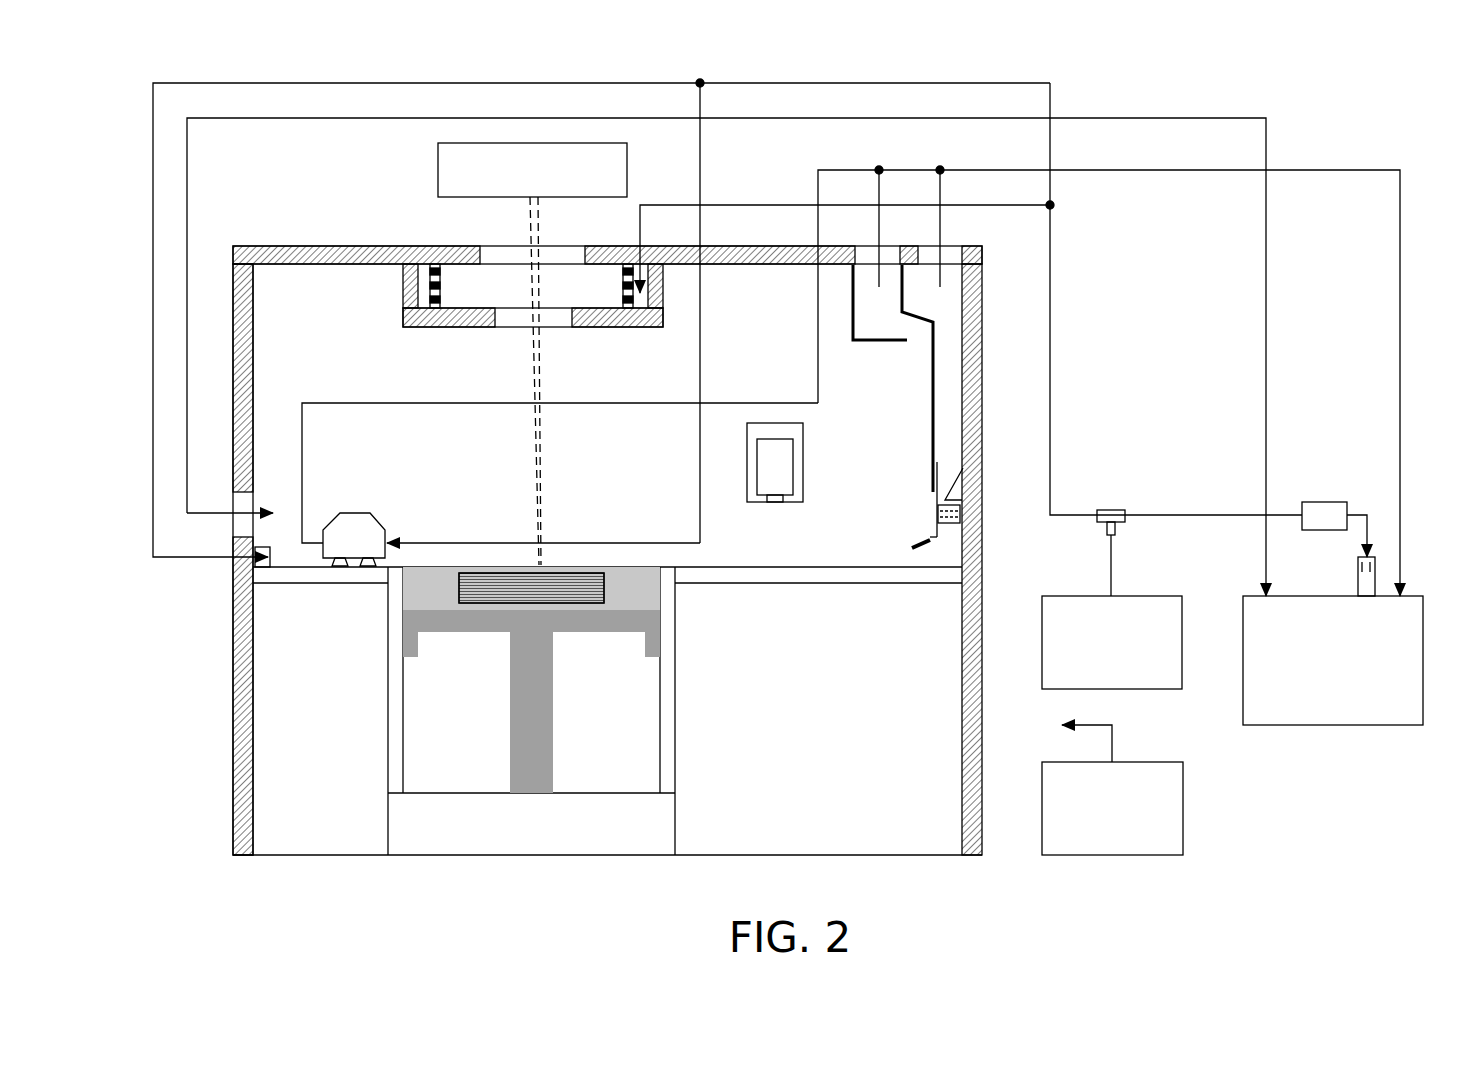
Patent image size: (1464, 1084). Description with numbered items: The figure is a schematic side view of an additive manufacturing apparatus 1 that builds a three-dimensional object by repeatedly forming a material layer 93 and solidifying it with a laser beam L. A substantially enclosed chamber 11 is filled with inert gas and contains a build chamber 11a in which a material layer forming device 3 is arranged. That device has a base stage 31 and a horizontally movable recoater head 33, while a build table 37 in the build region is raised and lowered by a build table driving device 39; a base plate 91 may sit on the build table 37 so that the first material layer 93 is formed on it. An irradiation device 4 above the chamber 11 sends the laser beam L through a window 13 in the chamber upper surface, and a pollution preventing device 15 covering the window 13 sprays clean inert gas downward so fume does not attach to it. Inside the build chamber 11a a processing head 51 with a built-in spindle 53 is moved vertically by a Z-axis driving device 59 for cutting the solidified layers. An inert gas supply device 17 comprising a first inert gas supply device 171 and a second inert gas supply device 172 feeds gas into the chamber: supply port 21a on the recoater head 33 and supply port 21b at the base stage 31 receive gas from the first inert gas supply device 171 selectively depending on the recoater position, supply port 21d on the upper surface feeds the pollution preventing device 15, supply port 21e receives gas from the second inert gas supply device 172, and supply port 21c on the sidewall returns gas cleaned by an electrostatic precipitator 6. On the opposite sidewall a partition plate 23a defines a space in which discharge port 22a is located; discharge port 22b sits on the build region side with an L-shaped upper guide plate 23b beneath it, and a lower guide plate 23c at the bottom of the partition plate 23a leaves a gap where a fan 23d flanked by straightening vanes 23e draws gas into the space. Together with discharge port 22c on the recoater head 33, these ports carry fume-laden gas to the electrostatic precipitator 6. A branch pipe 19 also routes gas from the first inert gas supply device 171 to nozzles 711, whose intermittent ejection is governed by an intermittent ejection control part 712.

The additive manufacturing apparatus 1 is at (115, 105).
The material layer forming device 3 is at (437, 503).
The irradiation device 4 is at (611, 158).
The electrostatic precipitator 6 is at (1415, 610).
The chamber 11 is at (975, 310).
The build chamber 11a is at (405, 380).
The window 13 is at (492, 248).
The pollution preventing device 15 is at (392, 302).
The inert gas supply device 17 is at (1226, 820).
The branch pipe 19 is at (1118, 510).
The supply port 21a is at (382, 533).
The supply port 21b is at (267, 568).
The supply port 21c is at (248, 503).
The supply port 21d is at (640, 248).
The supply port 21e is at (1061, 737).
The discharge port 22a is at (957, 262).
The discharge port 22b is at (895, 262).
The discharge port 22c is at (323, 540).
The partition plate 23a is at (930, 412).
The upper guide plate 23b is at (873, 342).
The lower guide plate 23c is at (915, 538).
The fan 23d is at (937, 510).
The straightening vane 23e is at (978, 461).
The base stage 31 is at (843, 572).
The recoater head 33 is at (355, 565).
The build table 37 is at (468, 627).
The build table driving device 39 is at (540, 670).
The processing head 51 is at (765, 458).
The spindle 53 is at (778, 503).
The Z-axis driving device 59 is at (800, 452).
The base plate 91 is at (582, 608).
The material layer 93 is at (578, 567).
The first inert gas supply device 171 is at (1163, 602).
The second inert gas supply device 172 is at (1163, 768).
The nozzles 711 is at (1360, 575).
The intermittent ejection control part 712 is at (1333, 503).
The laser beam L is at (545, 364).